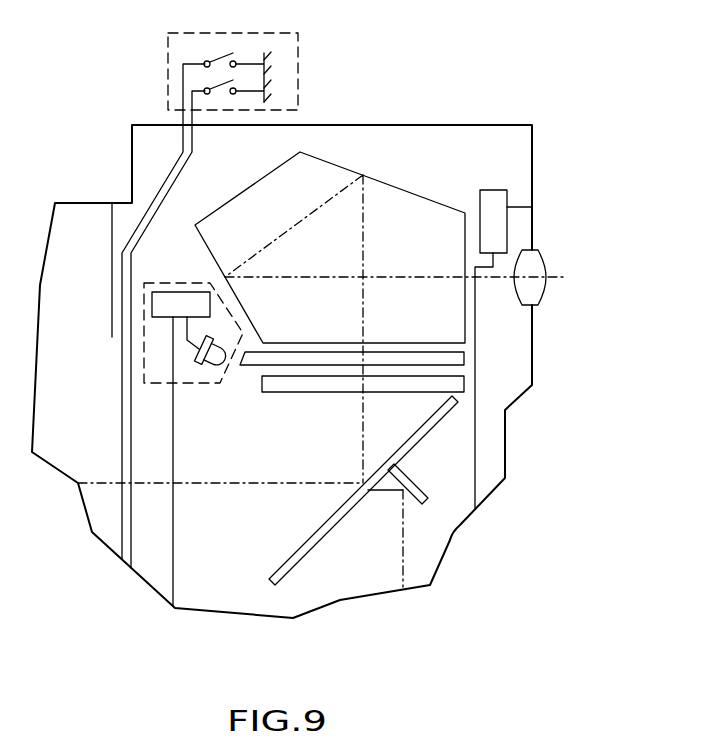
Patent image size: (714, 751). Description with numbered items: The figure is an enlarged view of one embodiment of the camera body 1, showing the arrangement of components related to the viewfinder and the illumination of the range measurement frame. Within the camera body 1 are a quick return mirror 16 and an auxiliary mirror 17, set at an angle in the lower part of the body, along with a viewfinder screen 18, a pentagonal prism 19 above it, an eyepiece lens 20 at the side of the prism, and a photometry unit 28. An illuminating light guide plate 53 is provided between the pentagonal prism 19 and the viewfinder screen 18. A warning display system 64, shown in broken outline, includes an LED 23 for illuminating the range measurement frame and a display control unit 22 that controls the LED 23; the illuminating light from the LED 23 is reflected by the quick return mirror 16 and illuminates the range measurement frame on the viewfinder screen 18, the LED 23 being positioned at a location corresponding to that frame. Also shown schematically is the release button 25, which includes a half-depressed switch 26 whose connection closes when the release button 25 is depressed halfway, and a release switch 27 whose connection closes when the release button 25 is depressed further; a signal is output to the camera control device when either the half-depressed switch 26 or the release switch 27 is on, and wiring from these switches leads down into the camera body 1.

The camera body 1 is at (568, 105).
The quick return mirror 16 is at (435, 422).
The auxiliary mirror 17 is at (428, 498).
The viewfinder screen 18 is at (464, 387).
The pentagonal prism 19 is at (432, 205).
The eyepiece lens 20 is at (543, 258).
The display control unit 22 is at (176, 292).
The LED 23 is at (207, 360).
The release button 25 is at (163, 92).
The half-depressed switch 26 is at (240, 56).
The release switch 27 is at (243, 80).
The photometry unit 28 is at (508, 206).
The illuminating light guide plate 53 is at (464, 362).
The warning display system 64 is at (150, 283).